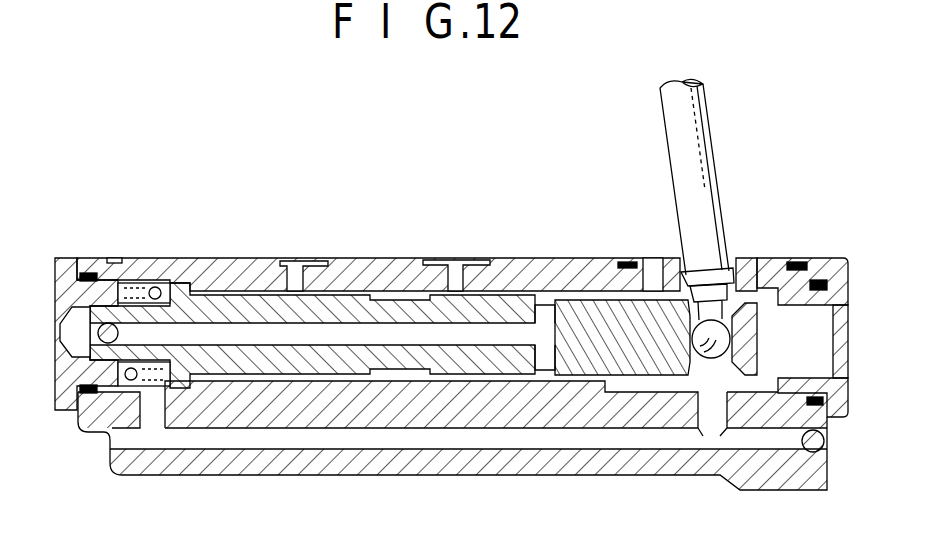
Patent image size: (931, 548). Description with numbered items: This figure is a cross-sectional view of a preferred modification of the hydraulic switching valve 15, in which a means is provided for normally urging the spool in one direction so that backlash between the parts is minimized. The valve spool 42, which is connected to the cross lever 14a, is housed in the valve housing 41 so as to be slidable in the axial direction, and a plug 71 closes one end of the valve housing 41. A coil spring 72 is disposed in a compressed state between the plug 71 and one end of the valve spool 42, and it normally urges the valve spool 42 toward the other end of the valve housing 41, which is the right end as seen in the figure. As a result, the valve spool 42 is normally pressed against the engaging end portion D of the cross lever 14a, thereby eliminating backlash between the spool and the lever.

The valve housing 41 is at (528, 258).
The plug 71 is at (72, 397).
The coil spring 72 is at (157, 282).
The hydraulic switching valve 15 is at (393, 258).
The valve spool 42 is at (353, 377).
The engaging end portion D is at (692, 360).
The cross lever 14a is at (693, 139).